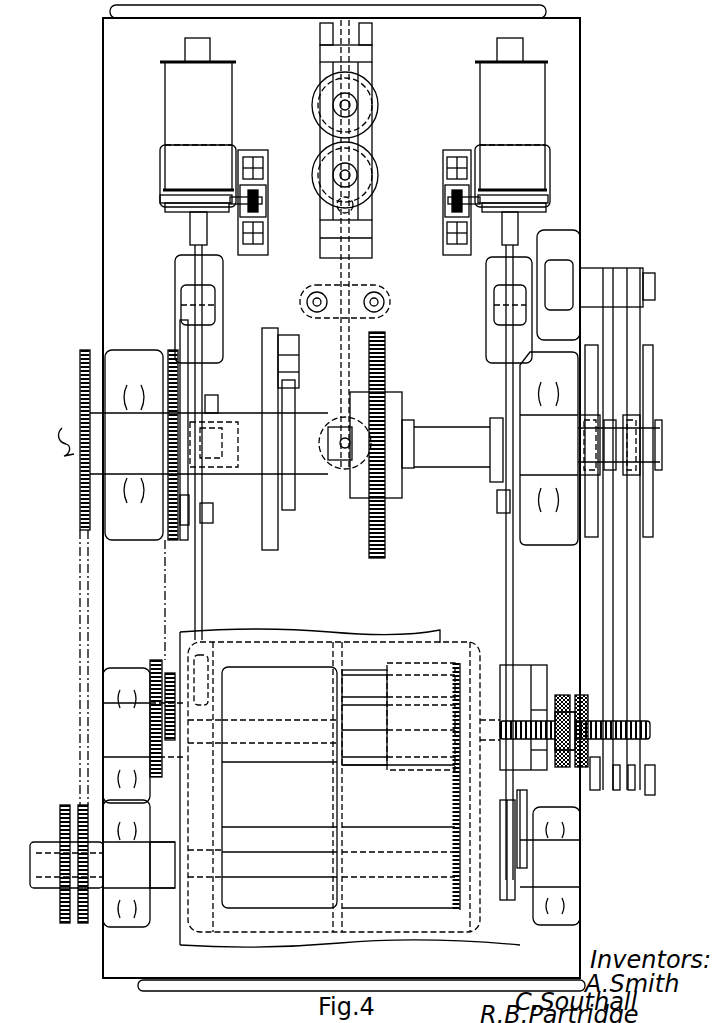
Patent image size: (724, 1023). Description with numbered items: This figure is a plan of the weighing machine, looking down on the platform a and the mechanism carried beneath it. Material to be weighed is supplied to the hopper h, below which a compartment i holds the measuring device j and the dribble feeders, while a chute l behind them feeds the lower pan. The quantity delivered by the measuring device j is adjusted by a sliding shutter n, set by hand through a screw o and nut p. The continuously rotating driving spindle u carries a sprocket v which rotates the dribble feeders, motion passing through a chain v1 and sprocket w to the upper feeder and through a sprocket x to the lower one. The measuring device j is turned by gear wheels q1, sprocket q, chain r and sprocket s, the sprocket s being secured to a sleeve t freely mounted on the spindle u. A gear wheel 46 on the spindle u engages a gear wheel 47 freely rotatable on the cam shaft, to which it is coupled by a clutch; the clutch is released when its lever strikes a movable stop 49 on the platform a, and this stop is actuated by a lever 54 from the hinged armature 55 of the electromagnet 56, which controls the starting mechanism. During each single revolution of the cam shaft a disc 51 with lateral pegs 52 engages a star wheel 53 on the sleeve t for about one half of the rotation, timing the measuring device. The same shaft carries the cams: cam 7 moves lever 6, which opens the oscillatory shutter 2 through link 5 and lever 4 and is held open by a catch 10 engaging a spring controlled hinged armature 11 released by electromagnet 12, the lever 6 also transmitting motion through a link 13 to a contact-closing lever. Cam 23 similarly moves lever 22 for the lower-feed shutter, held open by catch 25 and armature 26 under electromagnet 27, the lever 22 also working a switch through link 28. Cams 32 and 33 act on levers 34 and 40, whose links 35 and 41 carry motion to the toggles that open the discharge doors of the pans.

The platform a is at (578, 122).
The electromagnet 27 is at (198, 122).
The hinged spring controlled armature 26 is at (165, 201).
The catch 25 is at (190, 233).
The lever 22 is at (203, 577).
The cam 23 is at (212, 395).
The electromagnet 56 is at (372, 118).
The hinged armature 55 is at (372, 210).
The electromagnet 12 is at (512, 122).
The spring controlled hinged armature 11 is at (548, 203).
The catch 10 is at (502, 236).
The lever 6 is at (506, 612).
The lever 54 is at (345, 315).
The disc 51 is at (272, 557).
The lateral pegs 52 is at (290, 350).
The star wheel 53 is at (290, 505).
The sleeve t is at (244, 467).
The link 28 is at (190, 500).
The movable stop 49 is at (340, 470).
The gear wheel 46 is at (385, 415).
The gear wheel 47 is at (386, 350).
The cam 7 is at (490, 476).
The link 13 is at (515, 505).
The cam 32 is at (588, 360).
The cam 33 is at (652, 354).
The lever 34 is at (603, 625).
The lever 40 is at (640, 628).
The sprocket v is at (79, 393).
The sprocket s is at (170, 352).
The driving spindle u is at (70, 455).
The chain v1 is at (80, 618).
The sprocket q is at (165, 712).
The gear wheels q1 is at (152, 665).
The chain r is at (165, 617).
The sprocket x is at (60, 810).
The sprocket w is at (80, 925).
The hopper h is at (178, 938).
The chute l is at (282, 787).
The measuring device j is at (365, 765).
The oscillatory shutter 2 is at (398, 836).
The sliding shutter n is at (437, 762).
The compartment i is at (455, 912).
The screw o is at (650, 728).
The nut p is at (578, 695).
The link 35 is at (600, 790).
The link 41 is at (650, 795).
The link 5 is at (527, 800).
The lever 4 is at (510, 895).